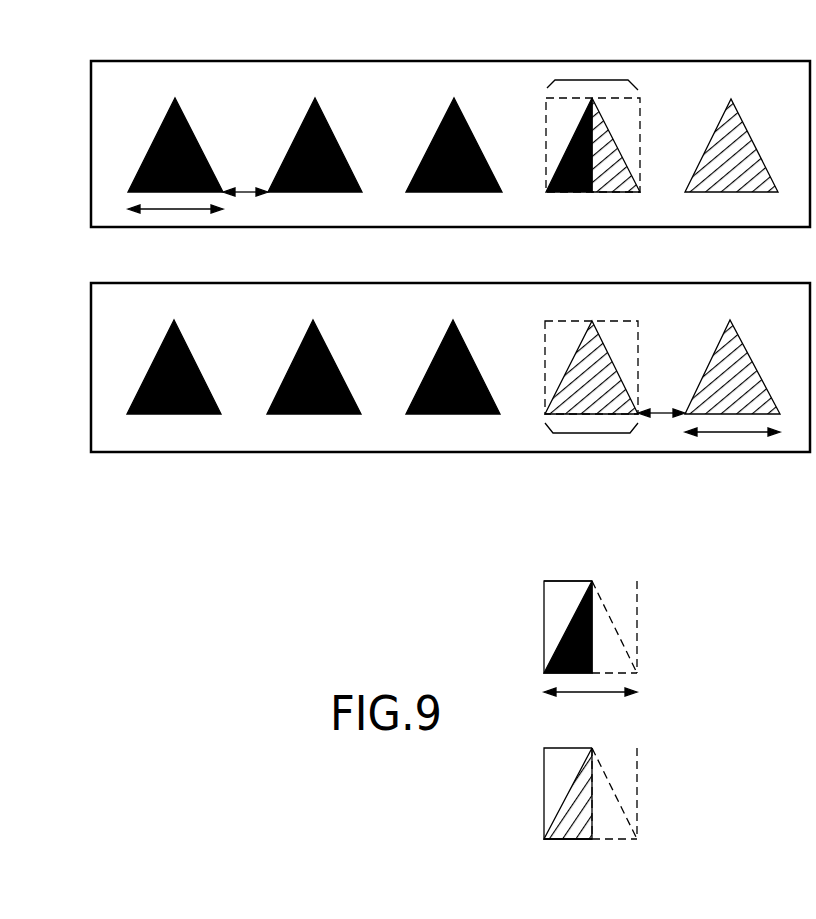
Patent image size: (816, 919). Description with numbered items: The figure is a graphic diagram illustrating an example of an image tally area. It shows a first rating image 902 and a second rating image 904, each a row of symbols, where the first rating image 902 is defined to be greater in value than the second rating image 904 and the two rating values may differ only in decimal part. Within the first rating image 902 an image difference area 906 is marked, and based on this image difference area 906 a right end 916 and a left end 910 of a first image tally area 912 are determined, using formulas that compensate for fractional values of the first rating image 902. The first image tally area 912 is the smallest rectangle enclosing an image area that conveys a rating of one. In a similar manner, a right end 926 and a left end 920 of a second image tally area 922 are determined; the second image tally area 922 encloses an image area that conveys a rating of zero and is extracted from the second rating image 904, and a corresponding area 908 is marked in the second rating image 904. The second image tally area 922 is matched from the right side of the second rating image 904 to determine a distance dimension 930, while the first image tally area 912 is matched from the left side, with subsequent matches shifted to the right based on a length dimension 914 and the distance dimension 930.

The first rating image 902 is at (91, 144).
The second rating image 904 is at (91, 366).
The image difference area 906 is at (596, 80).
The selected pixel element in second row 908 is at (592, 433).
The left end 910 is at (544, 627).
The first image tally area 912 is at (567, 581).
The length dimension 914 is at (175, 210).
The right end 916 is at (637, 627).
The left end 920 is at (544, 794).
The second image tally area 922 is at (567, 839).
The right end 926 is at (637, 794).
The distance dimension 930 is at (246, 190).